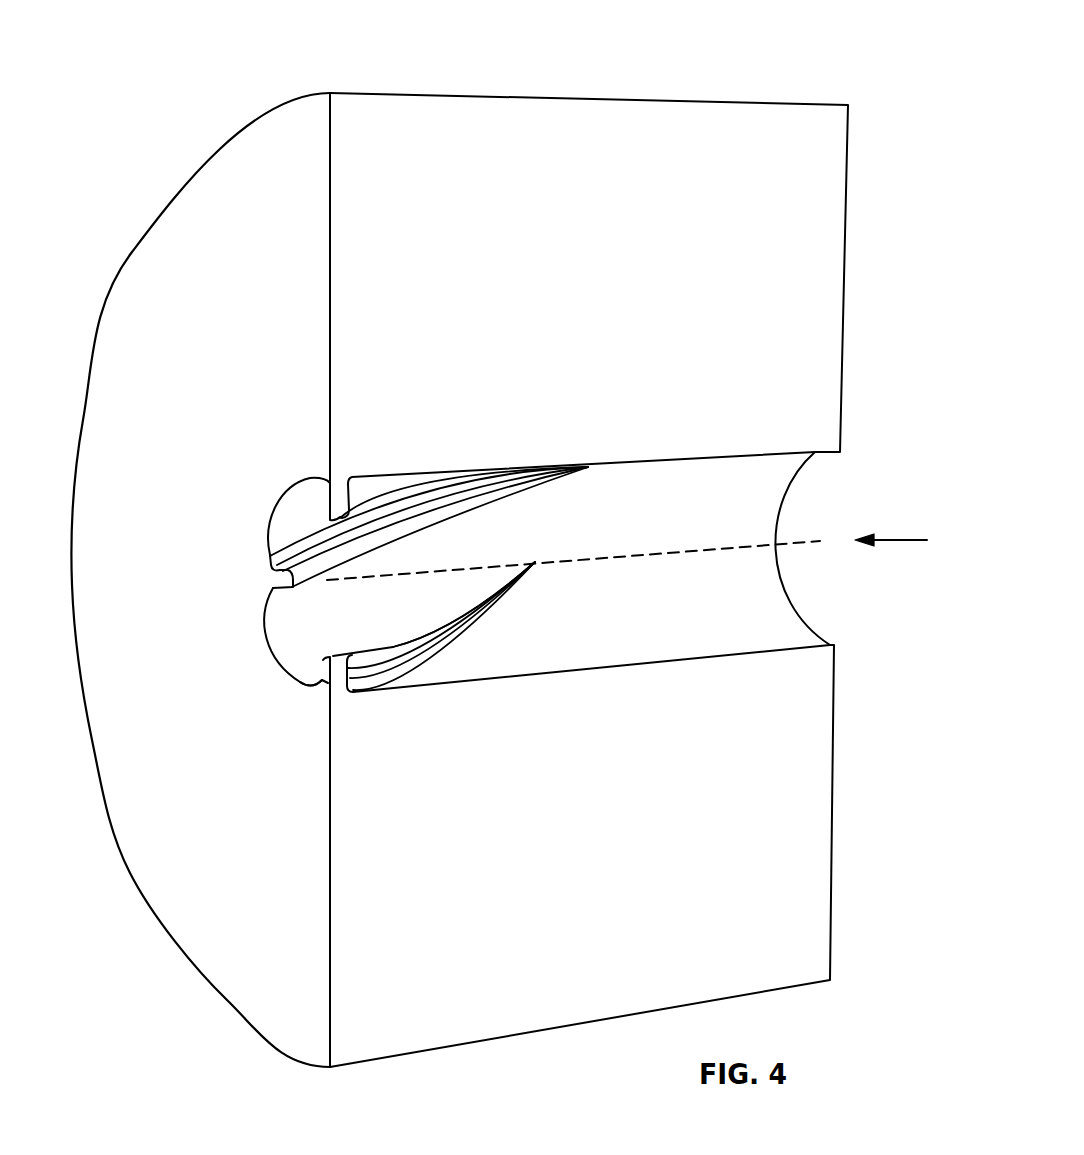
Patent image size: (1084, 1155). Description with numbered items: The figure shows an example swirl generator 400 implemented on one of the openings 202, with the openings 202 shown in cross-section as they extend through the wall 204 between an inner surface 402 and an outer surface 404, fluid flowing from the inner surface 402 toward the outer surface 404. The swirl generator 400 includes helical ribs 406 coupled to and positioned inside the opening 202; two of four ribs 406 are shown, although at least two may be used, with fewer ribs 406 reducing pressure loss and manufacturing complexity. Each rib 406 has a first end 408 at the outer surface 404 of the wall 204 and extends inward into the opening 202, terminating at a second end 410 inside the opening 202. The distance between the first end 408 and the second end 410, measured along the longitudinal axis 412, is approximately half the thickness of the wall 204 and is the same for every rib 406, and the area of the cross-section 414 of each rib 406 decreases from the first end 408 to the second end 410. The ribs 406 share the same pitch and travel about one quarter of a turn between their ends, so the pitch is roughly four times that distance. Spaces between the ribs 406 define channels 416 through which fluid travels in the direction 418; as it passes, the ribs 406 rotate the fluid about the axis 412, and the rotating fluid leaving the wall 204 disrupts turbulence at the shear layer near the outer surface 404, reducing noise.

The openings 202 is at (718, 460).
The wall 204 is at (607, 100).
The swirl generator 400 is at (186, 583).
The inner surface 402 is at (840, 415).
The outer surface 404 is at (132, 253).
The ribs 406 is at (423, 488).
The first end 408 is at (305, 690).
The second end 410 is at (537, 560).
The longitudinal axis 412 is at (820, 541).
The cross-section 414 is at (270, 587).
The channels 416 is at (280, 508).
The direction 418 is at (895, 540).